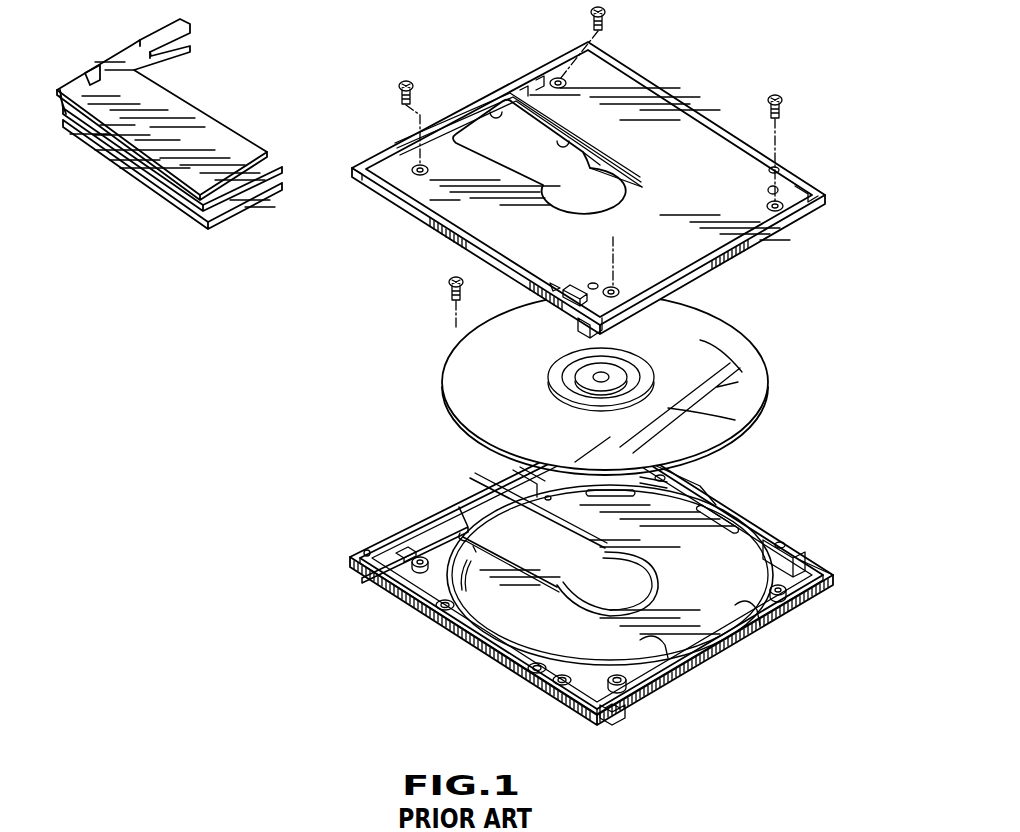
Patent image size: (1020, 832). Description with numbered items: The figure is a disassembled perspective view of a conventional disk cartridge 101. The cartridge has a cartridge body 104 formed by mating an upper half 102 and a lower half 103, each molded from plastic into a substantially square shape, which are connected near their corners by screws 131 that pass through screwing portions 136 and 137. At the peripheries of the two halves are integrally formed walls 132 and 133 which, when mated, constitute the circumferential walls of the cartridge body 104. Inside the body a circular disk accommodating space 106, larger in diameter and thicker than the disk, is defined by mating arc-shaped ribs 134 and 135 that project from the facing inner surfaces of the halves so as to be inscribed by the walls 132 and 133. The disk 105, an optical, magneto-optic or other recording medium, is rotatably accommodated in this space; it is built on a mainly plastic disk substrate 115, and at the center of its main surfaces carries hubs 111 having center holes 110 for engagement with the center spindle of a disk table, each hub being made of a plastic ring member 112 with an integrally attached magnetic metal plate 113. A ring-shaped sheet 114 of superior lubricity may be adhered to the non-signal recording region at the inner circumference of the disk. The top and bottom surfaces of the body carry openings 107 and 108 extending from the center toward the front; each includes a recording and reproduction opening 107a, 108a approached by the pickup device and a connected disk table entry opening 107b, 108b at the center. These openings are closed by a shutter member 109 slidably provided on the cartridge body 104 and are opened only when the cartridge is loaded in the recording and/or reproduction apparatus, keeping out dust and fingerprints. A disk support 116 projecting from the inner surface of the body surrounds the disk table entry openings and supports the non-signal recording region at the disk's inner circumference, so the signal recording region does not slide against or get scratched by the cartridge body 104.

The disk cartridge 101 is at (305, 377).
The upper half 102 is at (812, 217).
The lower half 103 is at (606, 589).
The cartridge body 104 is at (855, 476).
The disk 105 is at (730, 337).
The disk accommodating space 106 is at (690, 613).
The opening (top surface) 107 is at (748, 100).
The recording and reproduction opening 107a is at (498, 115).
The disk table entry opening 107b is at (622, 180).
The opening (bottom surface) 108 is at (503, 550).
The recording and reproduction opening 108a is at (697, 503).
The disk table entry opening 108b is at (577, 603).
The shutter member 109 is at (210, 130).
The center hole 110 is at (600, 377).
The hub 111 is at (578, 376).
The ring member 112 is at (580, 398).
The metal plate 113 is at (632, 358).
The ring-shaped sheet 114 is at (737, 420).
The disk substrate 115 is at (745, 372).
The disk support 116 is at (655, 573).
The screw 131 is at (400, 80).
The wall (upper half) 132 is at (420, 217).
The wall (lower half) 133 is at (461, 633).
The arc-shaped rib 134 is at (443, 577).
The arc-shaped rib 135 is at (747, 617).
The screwing portion 136 is at (420, 168).
The screwing portion 137 is at (418, 560).